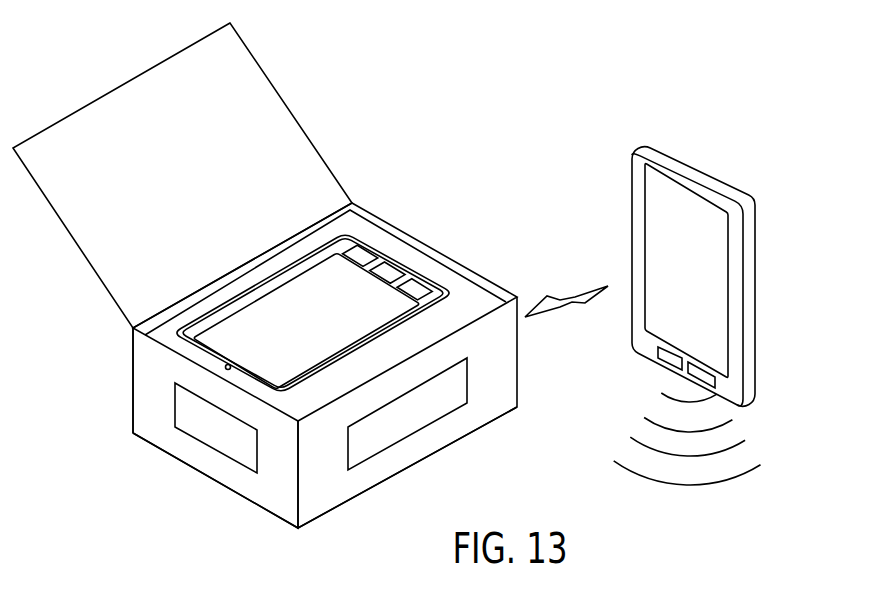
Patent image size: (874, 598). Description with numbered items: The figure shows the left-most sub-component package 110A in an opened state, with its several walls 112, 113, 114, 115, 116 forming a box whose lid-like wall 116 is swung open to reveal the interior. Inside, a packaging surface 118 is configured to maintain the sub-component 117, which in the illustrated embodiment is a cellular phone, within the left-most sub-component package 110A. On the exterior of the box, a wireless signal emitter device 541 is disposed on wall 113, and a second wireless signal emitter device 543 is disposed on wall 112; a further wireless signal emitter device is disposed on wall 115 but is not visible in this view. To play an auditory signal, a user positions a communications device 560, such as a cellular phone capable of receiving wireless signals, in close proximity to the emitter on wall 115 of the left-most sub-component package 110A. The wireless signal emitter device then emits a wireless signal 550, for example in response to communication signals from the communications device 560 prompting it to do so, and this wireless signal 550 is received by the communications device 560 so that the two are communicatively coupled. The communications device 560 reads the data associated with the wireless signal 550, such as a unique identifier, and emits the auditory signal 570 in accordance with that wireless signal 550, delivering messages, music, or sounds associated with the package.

The left-most sub-component package 110A is at (475, 210).
The wall 112 is at (330, 508).
The wall 113 is at (142, 403).
The wall 114 is at (133, 370).
The wall 115 is at (366, 209).
The wall 116 is at (278, 103).
The sub-component 117 is at (270, 304).
The packaging surface 118 is at (473, 301).
The wireless signal emitter device 541 is at (200, 442).
The wireless signal emitter device 543 is at (405, 440).
The wireless signal 550 is at (565, 282).
The communications device 560 is at (716, 164).
The auditory signal 570 is at (780, 434).